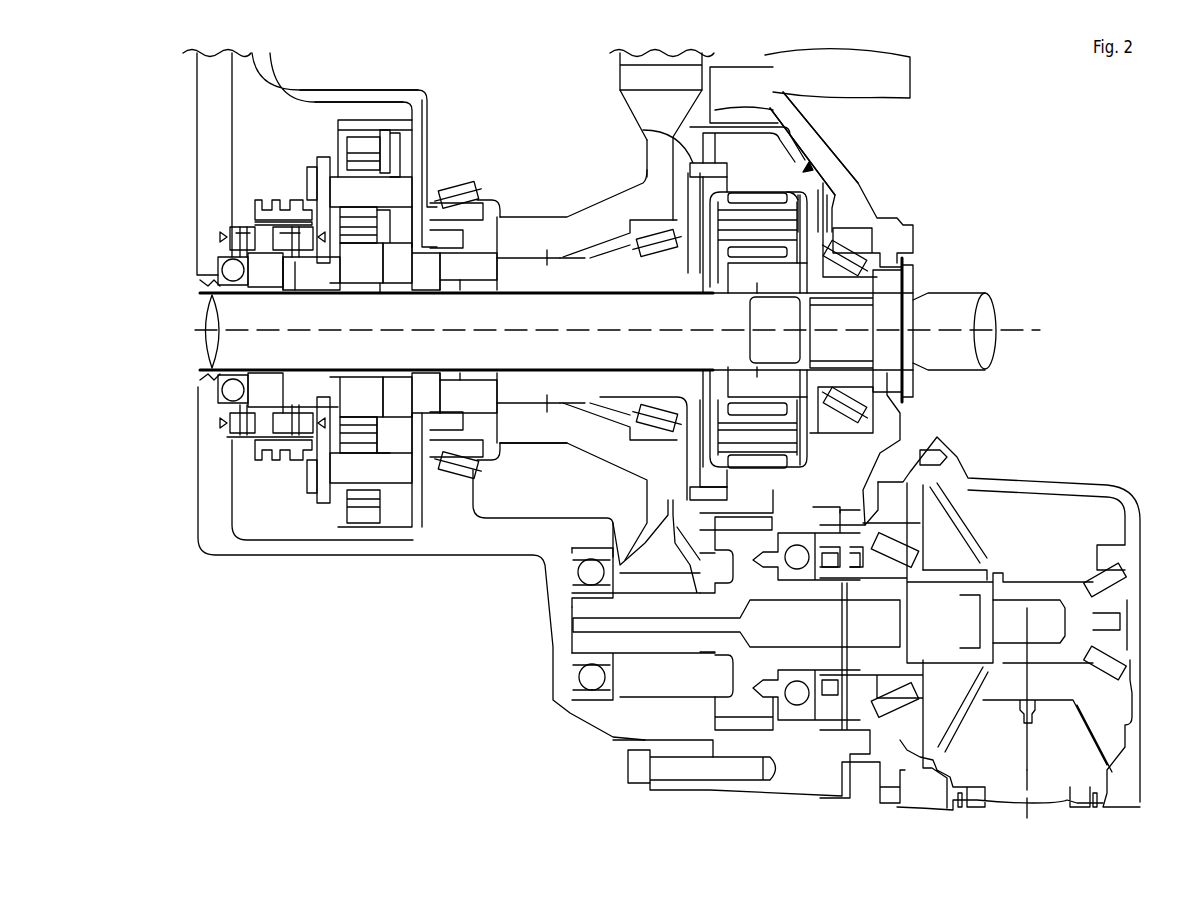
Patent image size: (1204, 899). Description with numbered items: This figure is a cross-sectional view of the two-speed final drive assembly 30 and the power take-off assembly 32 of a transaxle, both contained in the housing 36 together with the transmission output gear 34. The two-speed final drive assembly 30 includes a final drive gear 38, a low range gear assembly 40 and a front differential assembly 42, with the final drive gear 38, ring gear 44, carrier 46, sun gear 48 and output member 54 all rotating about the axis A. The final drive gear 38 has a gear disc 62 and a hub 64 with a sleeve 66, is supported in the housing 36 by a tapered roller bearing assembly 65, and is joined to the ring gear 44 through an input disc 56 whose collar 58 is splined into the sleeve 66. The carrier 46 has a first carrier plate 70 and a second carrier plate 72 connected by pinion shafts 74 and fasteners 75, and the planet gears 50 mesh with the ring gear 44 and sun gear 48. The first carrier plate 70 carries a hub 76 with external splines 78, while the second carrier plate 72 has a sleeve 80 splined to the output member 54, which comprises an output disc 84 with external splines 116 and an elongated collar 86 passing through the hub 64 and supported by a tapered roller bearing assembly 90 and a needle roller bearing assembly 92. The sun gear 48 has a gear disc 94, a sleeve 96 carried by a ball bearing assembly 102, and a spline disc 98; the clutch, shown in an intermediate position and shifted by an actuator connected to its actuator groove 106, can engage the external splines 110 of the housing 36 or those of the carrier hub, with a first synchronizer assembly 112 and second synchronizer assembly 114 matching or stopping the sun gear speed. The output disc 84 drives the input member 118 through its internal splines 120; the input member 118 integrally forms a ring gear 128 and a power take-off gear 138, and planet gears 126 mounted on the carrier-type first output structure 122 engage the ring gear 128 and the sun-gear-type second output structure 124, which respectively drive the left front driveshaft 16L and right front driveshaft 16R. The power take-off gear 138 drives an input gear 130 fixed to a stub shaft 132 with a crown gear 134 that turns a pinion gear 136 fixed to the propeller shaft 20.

The left front driveshaft 16L is at (206, 352).
The right front driveshaft 16R is at (970, 290).
The axis A is at (1026, 324).
The propeller shaft 20 is at (1050, 785).
The two-speed final drive assembly 30 is at (1080, 174).
The power take-off assembly 32 is at (1140, 455).
The output gear 34 is at (620, 62).
The housing 36 is at (197, 126).
The final drive gear 38 is at (622, 100).
The low range gear assembly 40 is at (295, 108).
The front differential assembly 42 is at (808, 168).
The ring gear 44 is at (380, 117).
The carrier 46 is at (292, 146).
The sun gear 48 is at (420, 270).
The planet gears 50 is at (350, 150).
The output member 54 is at (570, 300).
The input disc 56 is at (407, 168).
The collar 58 is at (470, 260).
The gear disc 62 is at (647, 165).
The hub 64 is at (593, 207).
The tapered roller bearing assembly 65 is at (475, 180).
The sleeve 66 is at (448, 275).
The first carrier plate 70 is at (327, 150).
The second carrier plate 72 is at (420, 118).
The pinion shafts 74 is at (368, 200).
The fasteners 75 is at (303, 178).
The hub 76 is at (353, 268).
The external splines 78 is at (295, 205).
The sleeve 80 is at (470, 278).
The output disc 84 is at (695, 278).
The elongated collar 86 is at (612, 275).
The tapered roller bearing assembly 90 is at (658, 260).
The needle roller bearing assembly 92 is at (575, 275).
The gear disc 94 is at (380, 300).
The sleeve 96 is at (270, 300).
The spline disc 98 is at (258, 283).
The ball bearing assembly 102 is at (228, 268).
The actuator groove 106 is at (262, 195).
The external splines 110 is at (232, 224).
The first synchronizer assembly 112 is at (293, 455).
The second synchronizer assembly 114 is at (232, 422).
The external splines 116 is at (690, 150).
The input member 118 is at (808, 150).
The internal splines 120 is at (715, 165).
The first output structure 122 is at (727, 280).
The second output structure 124 is at (775, 285).
The gears 126 is at (752, 197).
The ring gear 128 is at (740, 465).
The input gear 130 is at (722, 675).
The stub shaft 132 is at (640, 655).
The crown gear 134 is at (957, 557).
The pinion gear 136 is at (1120, 748).
The power take-off gear 138 is at (750, 133).